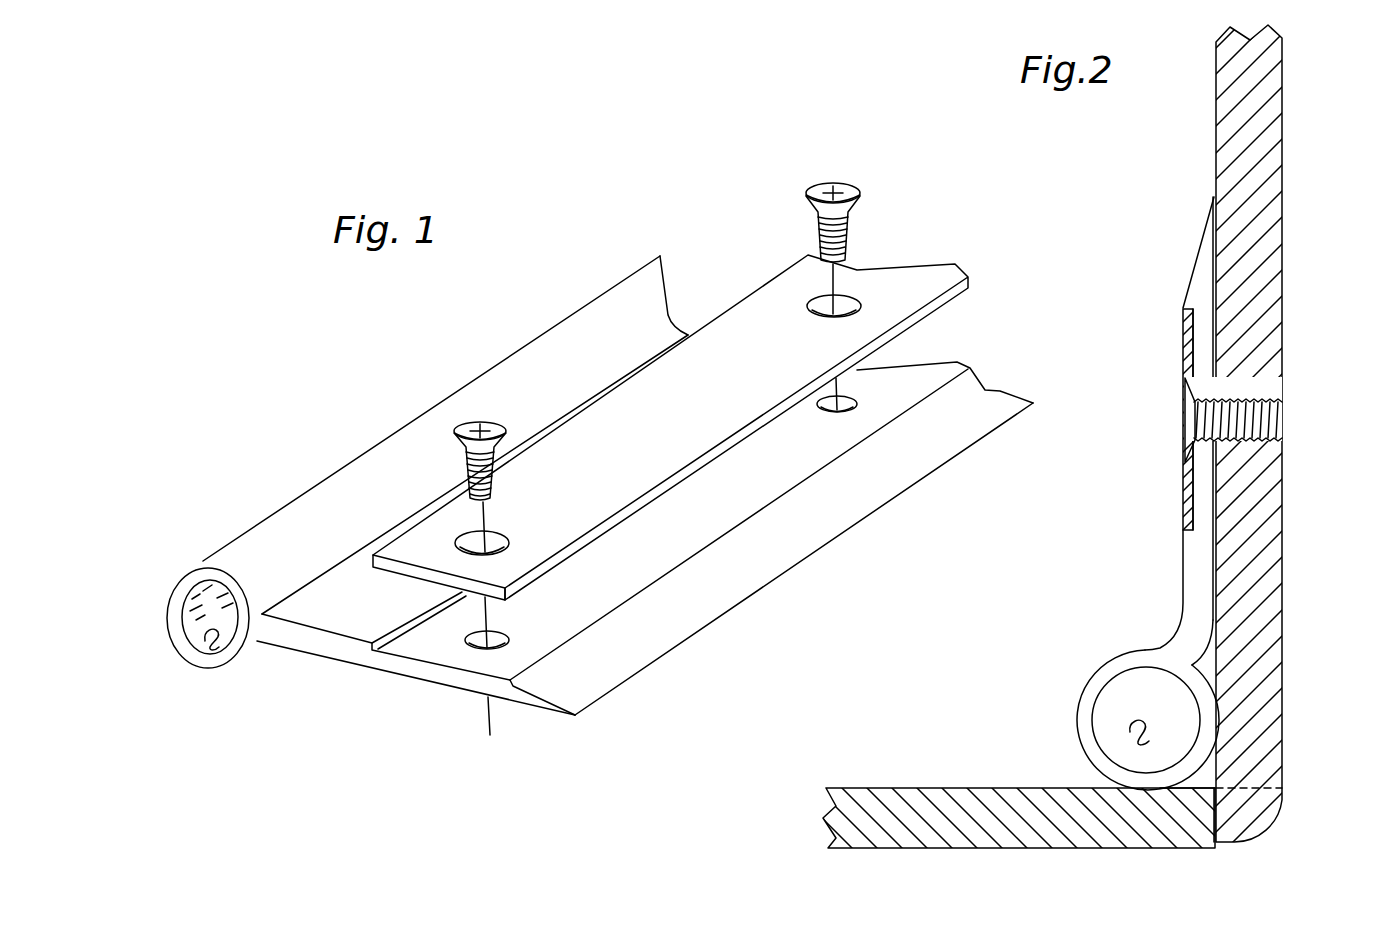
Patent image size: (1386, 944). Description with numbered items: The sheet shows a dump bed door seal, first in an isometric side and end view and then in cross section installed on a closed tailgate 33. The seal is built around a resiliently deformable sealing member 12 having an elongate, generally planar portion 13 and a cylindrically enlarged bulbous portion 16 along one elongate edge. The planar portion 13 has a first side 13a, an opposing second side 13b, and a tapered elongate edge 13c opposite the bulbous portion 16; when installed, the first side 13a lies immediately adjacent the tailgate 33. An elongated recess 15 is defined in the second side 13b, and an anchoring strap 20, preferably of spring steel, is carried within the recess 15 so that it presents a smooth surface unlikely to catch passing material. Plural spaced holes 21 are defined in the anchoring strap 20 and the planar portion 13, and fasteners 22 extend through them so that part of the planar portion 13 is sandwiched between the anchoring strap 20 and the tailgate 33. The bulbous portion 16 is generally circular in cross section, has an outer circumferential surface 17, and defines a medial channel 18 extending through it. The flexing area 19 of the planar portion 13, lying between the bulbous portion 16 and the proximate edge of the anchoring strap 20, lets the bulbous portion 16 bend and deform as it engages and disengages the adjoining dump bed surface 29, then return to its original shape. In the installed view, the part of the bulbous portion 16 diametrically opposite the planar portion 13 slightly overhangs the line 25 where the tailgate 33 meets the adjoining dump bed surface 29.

In FIG. 1, the sealing member 12 is at (660, 252).
In FIG. 2, the sealing member 12 is at (1180, 284).
In FIG. 1, the planar portion 13 is at (318, 604).
In FIG. 2, the planar portion 13 is at (1195, 583).
In FIG. 1, the first side 13a is at (388, 676).
In FIG. 2, the first side 13a is at (1213, 512).
In FIG. 1, the second side 13b is at (290, 572).
In FIG. 2, the second side 13b is at (1180, 545).
In FIG. 1, the tapered elongate edge 13c is at (733, 611).
In FIG. 2, the tapered elongate edge 13c is at (1202, 230).
In FIG. 1, the elongated recess 15 is at (728, 503).
In FIG. 2, the elongated recess 15 is at (1193, 372).
In FIG. 1, the bulbous portion 16 is at (362, 472).
In FIG. 2, the bulbous portion 16 is at (1102, 677).
In FIG. 1, the outer circumferential surface 17 is at (598, 325).
In FIG. 2, the outer circumferential surface 17 is at (1188, 789).
In FIG. 1, the medial channel 18 is at (212, 634).
In FIG. 2, the medial channel 18 is at (1128, 733).
In FIG. 1, the flexing area 19 is at (352, 678).
In FIG. 2, the flexing area 19 is at (1149, 537).
In FIG. 1, the anchoring strap 20 is at (745, 355).
In FIG. 2, the anchoring strap 20 is at (1185, 340).
In FIG. 1, the fastener holes 21 is at (852, 302).
In FIG. 1, the fasteners 22 is at (817, 183).
In FIG. 2, the fasteners 22 is at (1185, 418).
In FIG. 2, the line 25 is at (1240, 787).
In FIG. 2, the adjoining dump bed surface 29 is at (990, 790).
In FIG. 2, the tailgate 33 is at (1262, 305).